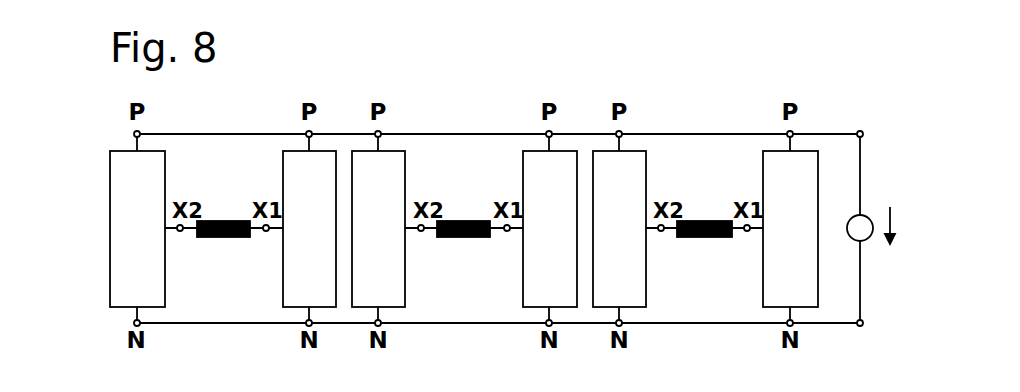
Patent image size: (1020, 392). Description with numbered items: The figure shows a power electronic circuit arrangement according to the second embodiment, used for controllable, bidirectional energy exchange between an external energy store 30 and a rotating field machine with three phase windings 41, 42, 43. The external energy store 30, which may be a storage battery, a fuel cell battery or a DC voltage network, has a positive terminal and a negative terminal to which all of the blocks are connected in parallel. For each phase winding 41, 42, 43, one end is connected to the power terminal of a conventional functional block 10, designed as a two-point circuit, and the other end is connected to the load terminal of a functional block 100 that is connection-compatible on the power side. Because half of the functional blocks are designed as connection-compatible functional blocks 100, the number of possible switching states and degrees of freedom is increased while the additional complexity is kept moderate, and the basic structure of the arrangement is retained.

The functional block that is connection-compatible on the power side 100 is at (153, 278).
The functional block 10 is at (324, 240).
The phase winding 41 is at (224, 245).
The phase winding 42 is at (464, 245).
The phase winding 43 is at (704, 245).
The external energy store 30 is at (861, 239).